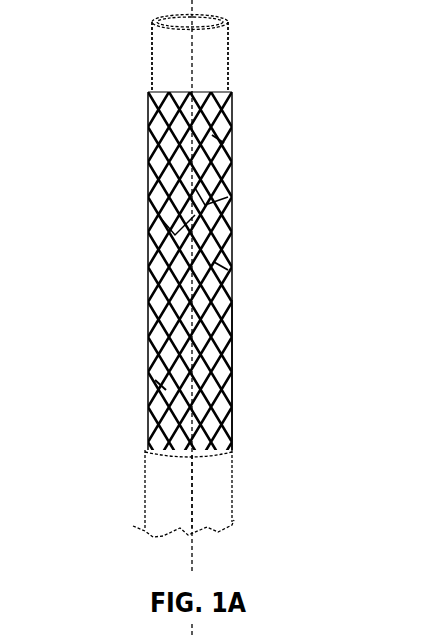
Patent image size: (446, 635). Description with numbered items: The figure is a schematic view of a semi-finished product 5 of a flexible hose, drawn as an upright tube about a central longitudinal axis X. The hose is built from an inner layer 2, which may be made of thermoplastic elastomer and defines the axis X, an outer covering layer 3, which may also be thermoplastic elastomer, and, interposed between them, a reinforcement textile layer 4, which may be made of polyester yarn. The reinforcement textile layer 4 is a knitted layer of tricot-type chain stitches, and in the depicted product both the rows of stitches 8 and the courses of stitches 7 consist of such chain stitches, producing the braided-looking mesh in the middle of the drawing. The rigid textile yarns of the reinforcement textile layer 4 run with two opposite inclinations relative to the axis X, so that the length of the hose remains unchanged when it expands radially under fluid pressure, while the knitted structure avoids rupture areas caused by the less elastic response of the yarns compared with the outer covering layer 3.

The semi-finished product 5 is at (108, 68).
The inner layer 2 is at (215, 92).
The outer covering layer 3 is at (160, 461).
The reinforcement textile layer 4 is at (228, 270).
The courses of stitches 7 is at (234, 368).
The rows of stitches 8 is at (146, 298).
The axis X is at (194, 510).